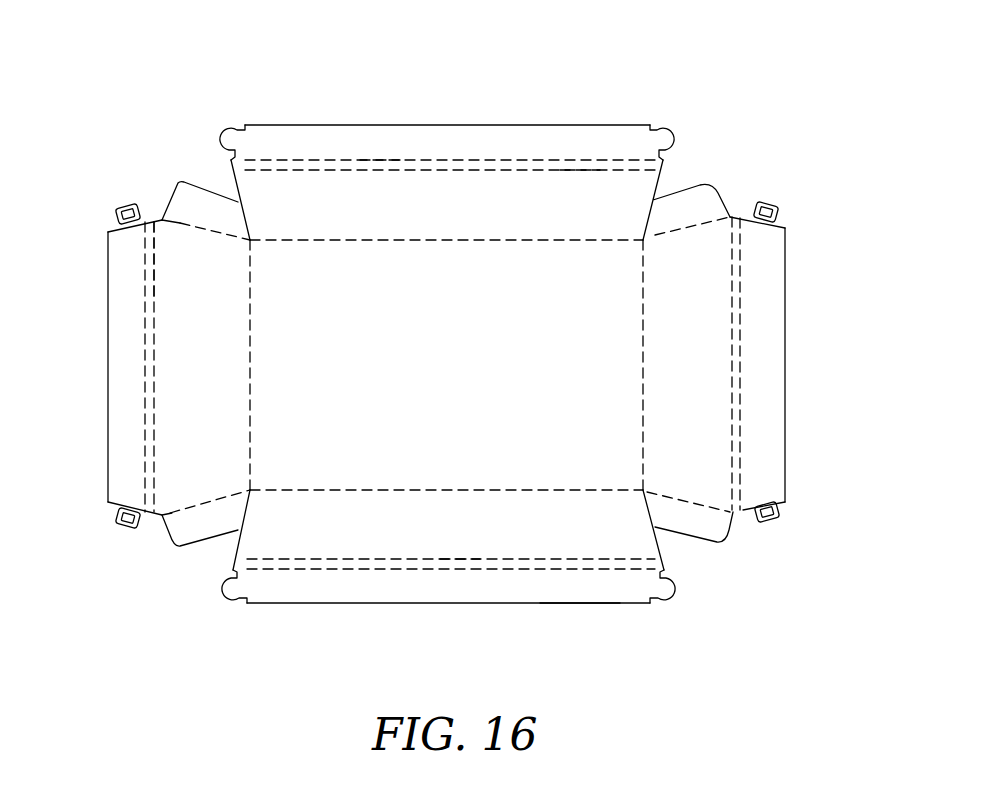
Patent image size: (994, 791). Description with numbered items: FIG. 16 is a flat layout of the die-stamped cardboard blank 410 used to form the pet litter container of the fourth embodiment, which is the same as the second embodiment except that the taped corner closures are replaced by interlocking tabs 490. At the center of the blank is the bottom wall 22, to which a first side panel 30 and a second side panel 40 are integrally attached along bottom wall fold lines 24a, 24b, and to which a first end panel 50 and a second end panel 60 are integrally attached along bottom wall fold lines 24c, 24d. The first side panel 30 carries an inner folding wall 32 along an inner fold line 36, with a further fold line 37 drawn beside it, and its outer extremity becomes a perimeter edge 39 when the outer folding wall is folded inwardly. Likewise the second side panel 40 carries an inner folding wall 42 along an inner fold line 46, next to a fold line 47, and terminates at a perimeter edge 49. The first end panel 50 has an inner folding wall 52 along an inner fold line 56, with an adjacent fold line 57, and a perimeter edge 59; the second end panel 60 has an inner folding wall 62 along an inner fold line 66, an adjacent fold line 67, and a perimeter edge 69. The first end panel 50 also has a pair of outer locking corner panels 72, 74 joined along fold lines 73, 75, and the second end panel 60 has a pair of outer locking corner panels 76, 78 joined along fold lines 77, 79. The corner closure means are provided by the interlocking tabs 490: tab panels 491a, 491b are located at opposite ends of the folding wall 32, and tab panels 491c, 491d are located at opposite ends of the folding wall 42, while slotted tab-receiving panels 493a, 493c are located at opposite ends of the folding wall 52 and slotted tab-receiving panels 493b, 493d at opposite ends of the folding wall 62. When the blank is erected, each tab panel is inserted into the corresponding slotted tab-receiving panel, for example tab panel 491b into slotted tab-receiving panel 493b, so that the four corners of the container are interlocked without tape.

The cardboard blank 410 is at (92, 108).
The interlocking tabs 490 is at (775, 160).
The bottom wall 22 is at (465, 385).
The bottom wall fold line 24a is at (582, 247).
The bottom wall fold line 24b is at (545, 490).
The bottom wall fold line 24c is at (253, 382).
The bottom wall fold line 24d is at (640, 392).
The first side panel 30 is at (582, 200).
The inner folding wall 32 is at (478, 146).
The inner fold line 36 is at (376, 165).
The fold line 37 is at (580, 165).
The perimeter edge 39 is at (316, 120).
The second side panel 40 is at (470, 525).
The inner folding wall 42 is at (475, 602).
The inner fold line 46 is at (470, 560).
The fold line 47 is at (325, 565).
The perimeter edge 49 is at (570, 608).
The first end panel 50 is at (168, 383).
The inner folding wall 52 is at (125, 300).
The inner fold line 56 is at (155, 465).
The fold line 57 is at (160, 290).
The perimeter edge 59 is at (103, 376).
The second end panel 60 is at (700, 375).
The inner folding wall 62 is at (760, 283).
The inner fold line 66 is at (738, 278).
The fold line 67 is at (735, 322).
The perimeter edge 69 is at (795, 377).
The outer locking corner panel 72 is at (200, 197).
The fold line 73 is at (183, 230).
The outer locking corner panel 74 is at (202, 555).
The fold line 75 is at (222, 498).
The outer locking corner panel 76 is at (685, 195).
The fold line 77 is at (662, 234).
The outer locking corner panel 78 is at (678, 530).
The fold line 79 is at (700, 505).
The tab panel 491a is at (222, 127).
The tab panel 491b is at (683, 127).
The tab panel 491c is at (218, 603).
The tab panel 491d is at (682, 602).
The slotted tab-receiving panel 493a is at (128, 200).
The slotted tab-receiving panel 493b is at (775, 200).
The slotted tab-receiving panel 493c is at (120, 520).
The slotted tab-receiving panel 493d is at (770, 522).